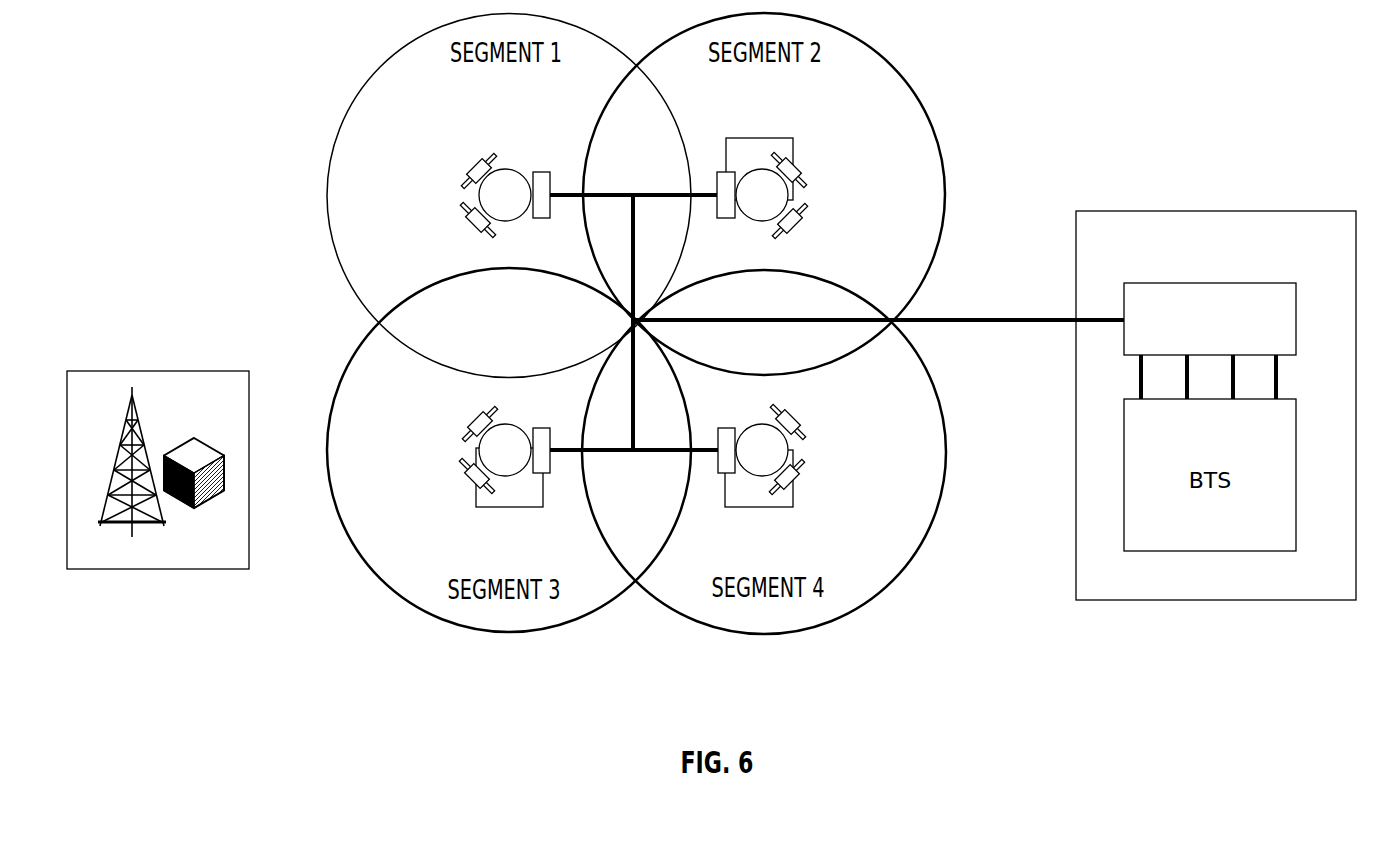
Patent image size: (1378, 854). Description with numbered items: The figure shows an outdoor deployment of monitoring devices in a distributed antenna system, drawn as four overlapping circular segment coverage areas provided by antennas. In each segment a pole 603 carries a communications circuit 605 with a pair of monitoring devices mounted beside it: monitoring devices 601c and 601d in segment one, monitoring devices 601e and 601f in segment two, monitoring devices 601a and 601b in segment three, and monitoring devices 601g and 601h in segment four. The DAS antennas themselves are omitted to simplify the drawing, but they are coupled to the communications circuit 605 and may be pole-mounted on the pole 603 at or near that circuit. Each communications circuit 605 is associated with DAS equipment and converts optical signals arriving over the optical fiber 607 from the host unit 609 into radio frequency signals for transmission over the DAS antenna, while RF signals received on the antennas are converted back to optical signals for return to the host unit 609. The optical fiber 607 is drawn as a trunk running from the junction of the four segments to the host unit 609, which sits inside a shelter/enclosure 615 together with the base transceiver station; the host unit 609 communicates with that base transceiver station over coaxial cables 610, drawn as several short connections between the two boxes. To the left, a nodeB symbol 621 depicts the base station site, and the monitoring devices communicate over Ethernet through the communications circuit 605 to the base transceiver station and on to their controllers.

The monitoring device 601a is at (468, 472).
The monitoring device 601b is at (470, 425).
The monitoring device 601c is at (468, 216).
The monitoring device 601d is at (469, 172).
The monitoring device 601e is at (800, 170).
The monitoring device 601f is at (800, 224).
The monitoring device 601g is at (800, 423).
The monitoring device 601h is at (800, 479).
The pole 603 is at (633, 322).
The communications circuit 605 is at (548, 172).
The optical fiber 607 is at (957, 325).
The host unit 609 is at (1210, 283).
The coaxial cables 610 is at (1122, 383).
The shelter/enclosure 615 is at (1112, 600).
The nodeB 621 is at (160, 371).